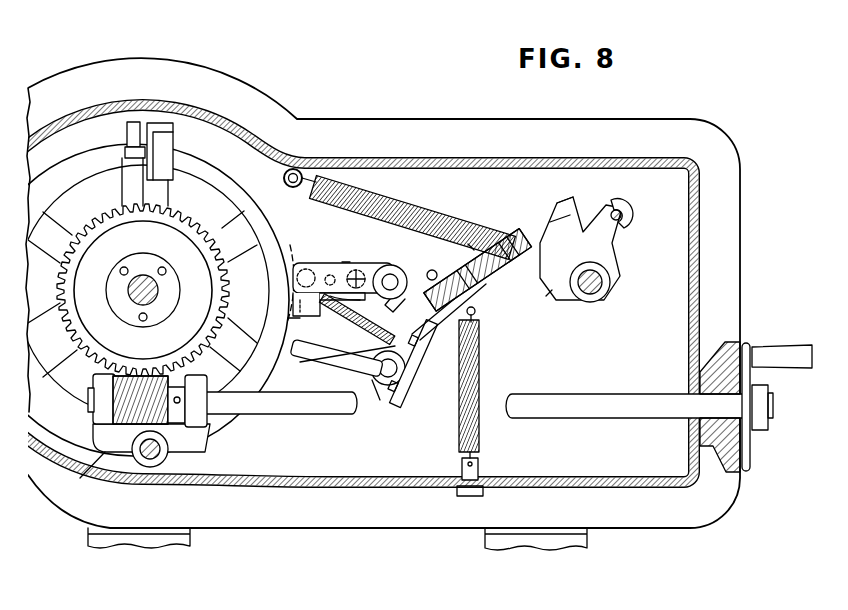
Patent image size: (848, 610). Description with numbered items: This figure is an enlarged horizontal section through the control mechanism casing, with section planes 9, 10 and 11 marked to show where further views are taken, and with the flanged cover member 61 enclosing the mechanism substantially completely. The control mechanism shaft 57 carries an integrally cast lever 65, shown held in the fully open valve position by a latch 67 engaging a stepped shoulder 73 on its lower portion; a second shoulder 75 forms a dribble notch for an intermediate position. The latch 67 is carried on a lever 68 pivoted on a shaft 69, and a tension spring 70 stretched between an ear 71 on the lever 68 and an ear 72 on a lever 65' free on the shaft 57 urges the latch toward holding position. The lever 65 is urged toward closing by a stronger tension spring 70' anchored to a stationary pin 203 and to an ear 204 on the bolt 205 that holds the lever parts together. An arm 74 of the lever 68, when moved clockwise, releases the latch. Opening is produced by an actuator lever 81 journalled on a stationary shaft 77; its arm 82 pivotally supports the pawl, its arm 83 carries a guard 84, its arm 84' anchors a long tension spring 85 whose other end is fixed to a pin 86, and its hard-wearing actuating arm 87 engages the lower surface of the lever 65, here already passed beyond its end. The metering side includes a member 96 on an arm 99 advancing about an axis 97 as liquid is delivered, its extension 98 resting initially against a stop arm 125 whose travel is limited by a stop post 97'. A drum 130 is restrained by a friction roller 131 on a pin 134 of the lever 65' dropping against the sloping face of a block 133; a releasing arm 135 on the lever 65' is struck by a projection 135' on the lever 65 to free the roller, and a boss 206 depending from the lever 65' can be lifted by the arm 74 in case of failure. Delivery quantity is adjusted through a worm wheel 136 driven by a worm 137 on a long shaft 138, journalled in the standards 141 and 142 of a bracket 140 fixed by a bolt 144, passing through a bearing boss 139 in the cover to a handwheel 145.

The section line 9- 9 is at (197, 27).
The section line 10- 10 is at (250, 312).
The section line 11- 11 is at (558, 84).
The control mechanism shaft 57 is at (392, 266).
The flanged cover member 61 is at (700, 161).
The lever 65 is at (478, 253).
The lever 65' is at (330, 240).
The latch 67 is at (428, 336).
The lever 68 is at (378, 384).
The shaft 69 is at (390, 386).
The tension spring 70 is at (356, 322).
The tension spring 70' is at (492, 386).
The ear 71 is at (372, 351).
The ear 72 is at (315, 300).
The stepped shoulder 73 is at (446, 318).
The arm 74 is at (296, 352).
The shoulder 75 is at (480, 338).
The stationary shaft 77 is at (608, 290).
The actuator lever 81 is at (614, 280).
The arm 82 is at (616, 252).
The arm 83 is at (562, 218).
The guard 84 is at (544, 192).
The arm 84' is at (558, 312).
The long tension spring 85 is at (402, 207).
The pin 86 is at (297, 170).
The actuating arm 87 is at (600, 205).
The member 96 is at (133, 125).
The axis 97 is at (160, 310).
The stop post 97' is at (294, 269).
The extension 98 is at (126, 152).
The arm 99 is at (133, 183).
The stop arm 125 is at (174, 128).
The drum 130 is at (215, 166).
The friction roller restraint 131 is at (298, 266).
The block 133 is at (343, 268).
The pin 134 is at (300, 299).
The releasing arm 135 is at (414, 258).
The projection 135' is at (523, 285).
The worm wheel 136 is at (120, 240).
The worm 137 is at (168, 424).
The long shaft 138 is at (295, 414).
The bearing boss 139 is at (694, 418).
The bracket 140 is at (100, 446).
The bearing standard 141 is at (94, 384).
The bearing standard 142 is at (212, 430).
The bolt 144 is at (151, 466).
The handwheel 145 is at (754, 378).
The stationary pin 203 is at (482, 470).
The ear 204 is at (476, 313).
The bolt 205 is at (470, 246).
The boss 206 is at (288, 318).